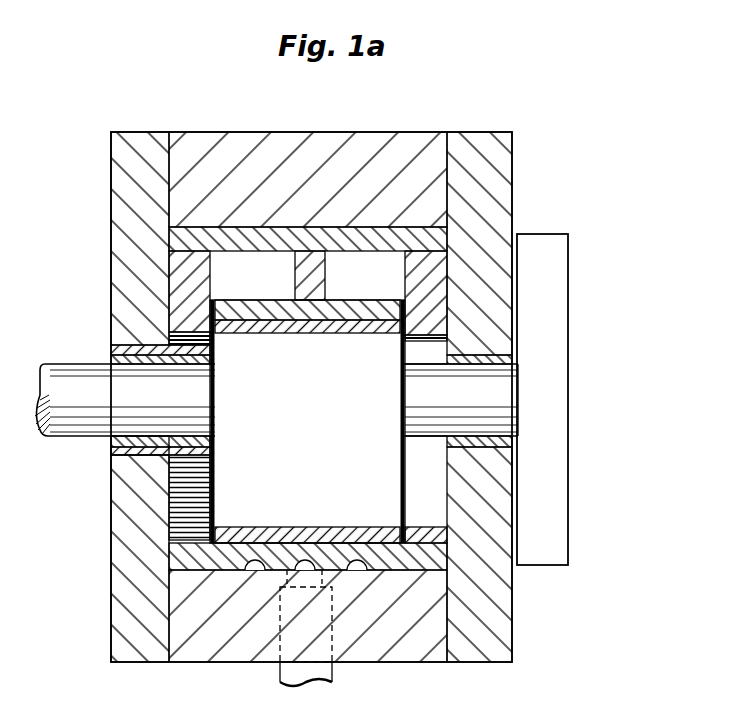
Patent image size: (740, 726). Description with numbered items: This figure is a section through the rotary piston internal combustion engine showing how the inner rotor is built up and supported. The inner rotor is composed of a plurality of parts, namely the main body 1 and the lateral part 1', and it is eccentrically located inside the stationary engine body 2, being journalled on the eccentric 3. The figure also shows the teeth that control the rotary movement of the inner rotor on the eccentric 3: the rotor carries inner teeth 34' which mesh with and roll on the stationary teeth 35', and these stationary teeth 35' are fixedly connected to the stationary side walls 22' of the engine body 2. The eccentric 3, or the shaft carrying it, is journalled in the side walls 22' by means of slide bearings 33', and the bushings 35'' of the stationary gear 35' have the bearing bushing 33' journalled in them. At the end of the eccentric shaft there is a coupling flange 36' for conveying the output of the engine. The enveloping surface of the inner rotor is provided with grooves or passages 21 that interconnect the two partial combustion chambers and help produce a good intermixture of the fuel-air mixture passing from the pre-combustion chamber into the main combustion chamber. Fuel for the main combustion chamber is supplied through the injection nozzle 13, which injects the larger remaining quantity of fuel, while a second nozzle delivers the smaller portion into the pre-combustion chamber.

The main body 1 is at (356, 191).
The lateral part 1' is at (254, 397).
The stationary engine body 2 is at (417, 647).
The eccentric 3 is at (372, 426).
The injection nozzle 13 is at (333, 668).
The grooves or passages 21 is at (255, 562).
The stationary side walls 22' is at (308, 404).
The slide bearings 33' is at (331, 411).
The inner teeth 34' is at (220, 497).
The stationary teeth 35' is at (308, 400).
The bushings 35'' is at (106, 483).
The coupling flange 36' is at (568, 399).